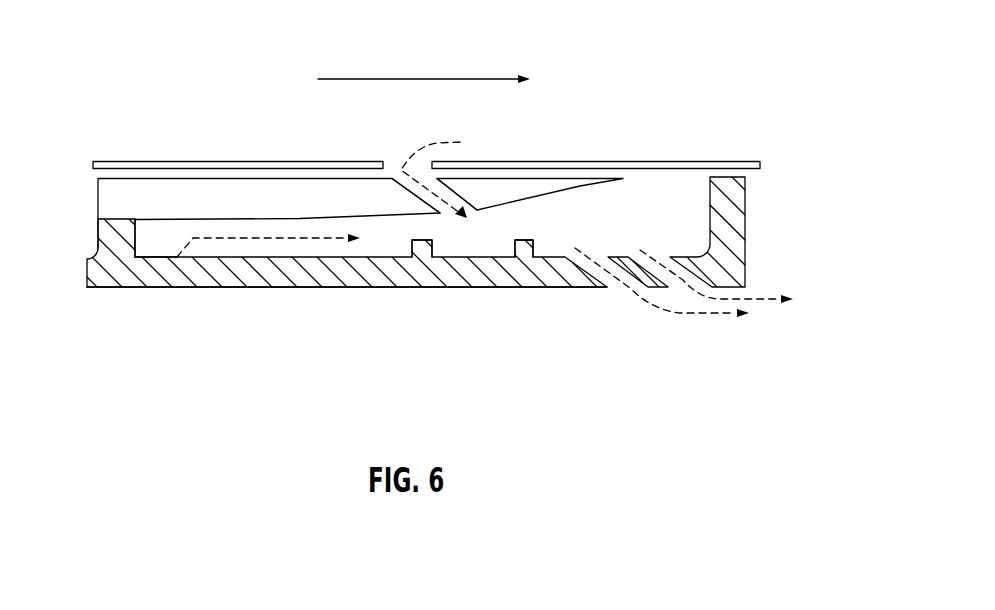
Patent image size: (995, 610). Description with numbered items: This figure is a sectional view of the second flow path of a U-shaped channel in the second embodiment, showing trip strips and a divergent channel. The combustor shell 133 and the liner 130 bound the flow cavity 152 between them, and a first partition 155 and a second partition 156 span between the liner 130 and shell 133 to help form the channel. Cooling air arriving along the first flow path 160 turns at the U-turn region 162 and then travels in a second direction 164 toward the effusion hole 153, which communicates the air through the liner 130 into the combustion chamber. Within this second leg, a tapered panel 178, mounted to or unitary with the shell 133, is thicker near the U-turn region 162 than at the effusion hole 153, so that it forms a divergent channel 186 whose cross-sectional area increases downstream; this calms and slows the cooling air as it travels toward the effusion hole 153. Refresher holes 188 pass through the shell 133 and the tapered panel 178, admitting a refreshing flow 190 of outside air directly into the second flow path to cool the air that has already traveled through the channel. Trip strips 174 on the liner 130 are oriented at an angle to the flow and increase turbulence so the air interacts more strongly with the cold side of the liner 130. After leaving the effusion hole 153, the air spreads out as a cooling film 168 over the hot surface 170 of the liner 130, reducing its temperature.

The liner 130 is at (280, 272).
The combustor shell 133 is at (562, 162).
The flow cavity 152 is at (568, 211).
The effusion hole 153 is at (613, 288).
The first partition 155 is at (727, 218).
The second partition 156 is at (117, 238).
The first flow path 160 is at (661, 59).
The U-turn region 162 is at (152, 249).
The second direction 164 is at (425, 79).
The cooling film 168 is at (763, 297).
The hot surface 170 is at (458, 288).
The trip strips 174 is at (523, 252).
The tapered panel 178 is at (163, 200).
The divergent channel 186 is at (487, 250).
The refresher holes 188 is at (394, 178).
The refreshing flow 190 is at (451, 172).